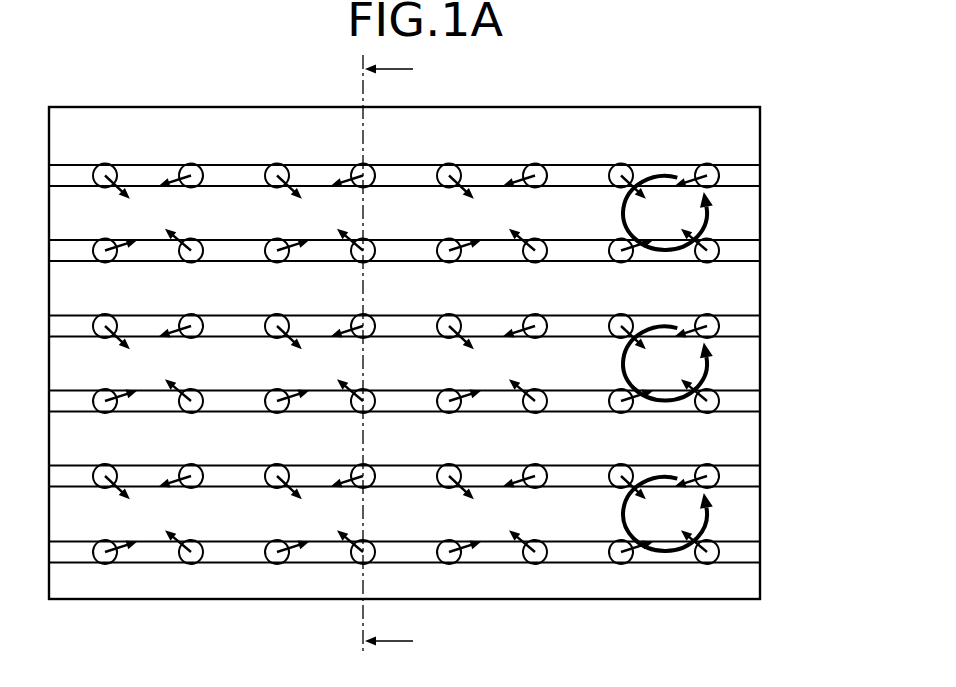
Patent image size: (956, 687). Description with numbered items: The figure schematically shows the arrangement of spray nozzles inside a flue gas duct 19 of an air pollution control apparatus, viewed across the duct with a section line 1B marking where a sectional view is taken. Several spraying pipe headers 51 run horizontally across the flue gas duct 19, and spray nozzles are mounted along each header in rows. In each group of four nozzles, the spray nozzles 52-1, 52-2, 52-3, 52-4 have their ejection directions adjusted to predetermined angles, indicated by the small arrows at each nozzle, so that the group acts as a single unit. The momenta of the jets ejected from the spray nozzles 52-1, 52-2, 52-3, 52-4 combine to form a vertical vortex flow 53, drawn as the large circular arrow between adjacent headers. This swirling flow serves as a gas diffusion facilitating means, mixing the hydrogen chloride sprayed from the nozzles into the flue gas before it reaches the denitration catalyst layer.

The flue gas duct 19 is at (212, 600).
The spraying pipe header 51 is at (148, 175).
The spray nozzle 52-1 is at (718, 173).
The spray nozzle 52-2 is at (718, 251).
The spray nozzle 52-3 is at (630, 256).
The spray nozzle 52-4 is at (608, 180).
The vertical vortex flow 53 is at (702, 222).
The section line 1B is at (406, 355).